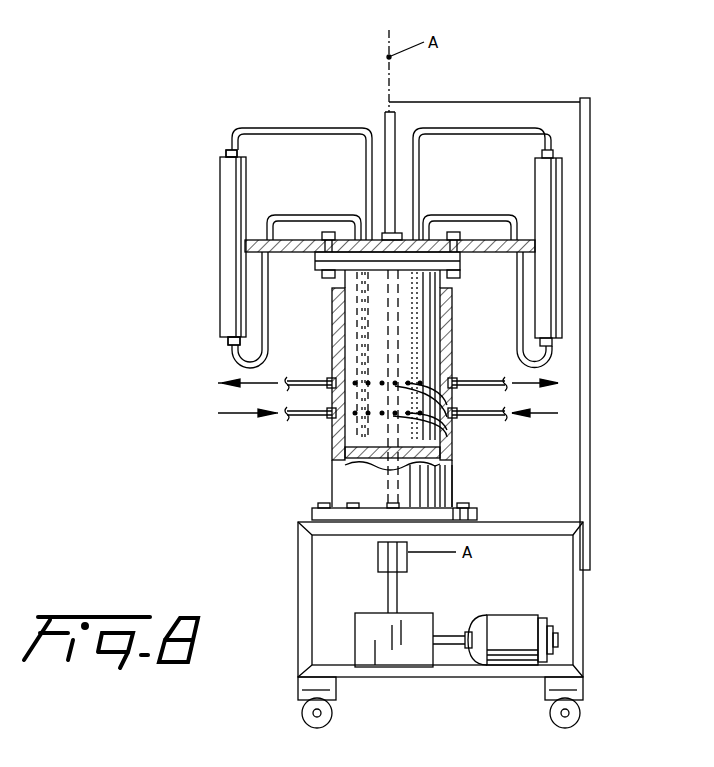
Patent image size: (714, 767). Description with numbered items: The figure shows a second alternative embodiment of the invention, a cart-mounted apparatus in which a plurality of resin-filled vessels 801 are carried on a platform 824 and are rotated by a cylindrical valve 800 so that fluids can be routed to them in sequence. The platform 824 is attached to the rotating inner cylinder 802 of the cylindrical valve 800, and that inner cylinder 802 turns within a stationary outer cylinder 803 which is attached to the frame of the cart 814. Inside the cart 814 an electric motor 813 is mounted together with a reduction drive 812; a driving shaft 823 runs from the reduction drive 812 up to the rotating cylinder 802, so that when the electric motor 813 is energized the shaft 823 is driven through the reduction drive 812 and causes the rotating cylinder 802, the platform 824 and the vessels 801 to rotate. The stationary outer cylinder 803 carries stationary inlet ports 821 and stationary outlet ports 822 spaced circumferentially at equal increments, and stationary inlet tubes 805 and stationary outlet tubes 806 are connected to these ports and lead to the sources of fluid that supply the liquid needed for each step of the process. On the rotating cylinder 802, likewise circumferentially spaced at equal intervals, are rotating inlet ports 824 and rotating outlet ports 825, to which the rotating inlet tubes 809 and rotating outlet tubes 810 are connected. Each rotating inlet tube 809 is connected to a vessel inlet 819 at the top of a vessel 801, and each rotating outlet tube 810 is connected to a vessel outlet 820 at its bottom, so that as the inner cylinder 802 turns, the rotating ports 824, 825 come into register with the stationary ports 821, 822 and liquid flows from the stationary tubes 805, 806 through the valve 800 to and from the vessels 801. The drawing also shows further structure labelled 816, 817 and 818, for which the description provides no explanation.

The cylindrical valve 800 is at (442, 343).
The resin-filled vessels 801 is at (220, 195).
The rotating inner cylinder 802 is at (440, 288).
The stationary outer cylinder 803 is at (455, 481).
The stationary inlet tubes 805 is at (300, 418).
The stationary outlet tubes 806 is at (285, 388).
The rotating inlet tubes 809 is at (240, 128).
The rotating outlet tubes 810 is at (240, 356).
The reduction drive 812 is at (435, 615).
The electric motor 813 is at (545, 618).
The cart 814 is at (585, 635).
The inner passage 816 is at (362, 287).
The passage 817 is at (355, 322).
The support post 818 is at (590, 122).
The vessel inlet 819 is at (228, 152).
The vessel outlet 820 is at (228, 341).
The stationary inlet ports 821 is at (328, 419).
The stationary outlet ports 822 is at (329, 381).
The driving shaft 823 is at (384, 125).
The platform 824 is at (522, 240).
The rotating outlet ports 825 is at (445, 368).